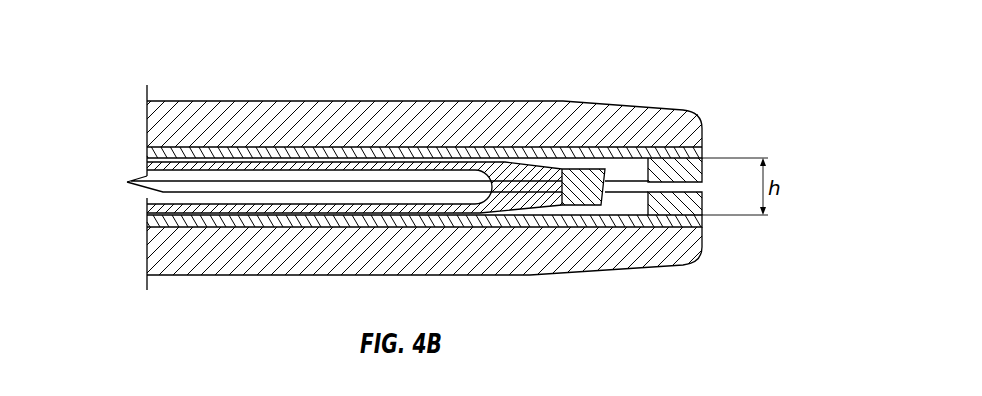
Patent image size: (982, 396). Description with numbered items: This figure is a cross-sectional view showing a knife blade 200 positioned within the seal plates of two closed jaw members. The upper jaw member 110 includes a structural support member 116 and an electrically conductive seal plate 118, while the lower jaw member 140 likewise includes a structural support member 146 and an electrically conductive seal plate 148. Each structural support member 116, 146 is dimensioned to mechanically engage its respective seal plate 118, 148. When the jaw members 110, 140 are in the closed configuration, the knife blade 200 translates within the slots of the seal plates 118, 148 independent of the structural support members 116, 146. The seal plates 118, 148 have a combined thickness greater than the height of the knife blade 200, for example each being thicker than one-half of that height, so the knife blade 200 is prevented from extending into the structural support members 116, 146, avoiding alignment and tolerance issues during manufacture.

The jaw member 110 is at (459, 109).
The structural support member 116 is at (693, 113).
The seal plate 118 is at (702, 147).
The jaw member 140 is at (459, 266).
The structural support member 146 is at (692, 263).
The seal plate 148 is at (692, 217).
The knife blade 200 is at (345, 165).